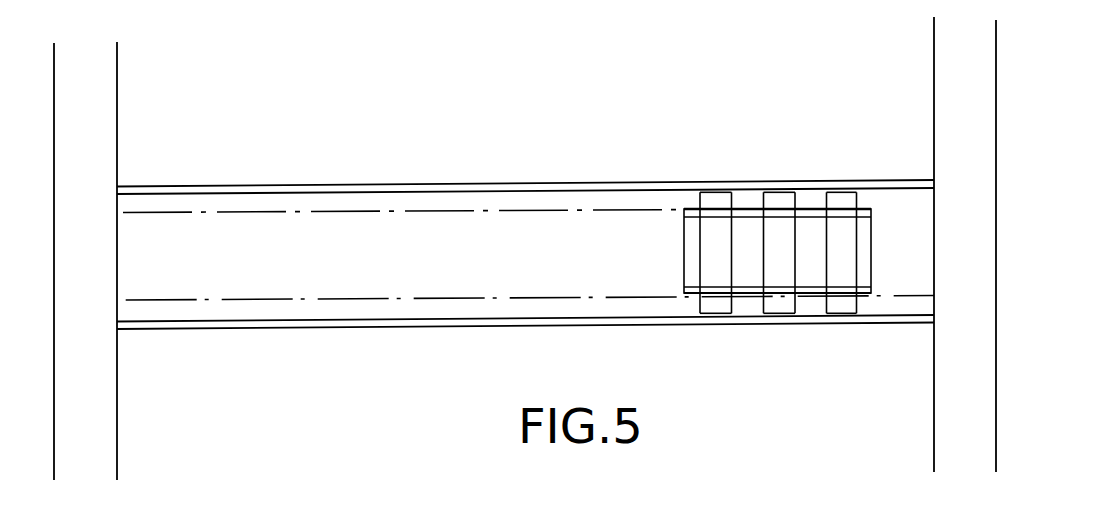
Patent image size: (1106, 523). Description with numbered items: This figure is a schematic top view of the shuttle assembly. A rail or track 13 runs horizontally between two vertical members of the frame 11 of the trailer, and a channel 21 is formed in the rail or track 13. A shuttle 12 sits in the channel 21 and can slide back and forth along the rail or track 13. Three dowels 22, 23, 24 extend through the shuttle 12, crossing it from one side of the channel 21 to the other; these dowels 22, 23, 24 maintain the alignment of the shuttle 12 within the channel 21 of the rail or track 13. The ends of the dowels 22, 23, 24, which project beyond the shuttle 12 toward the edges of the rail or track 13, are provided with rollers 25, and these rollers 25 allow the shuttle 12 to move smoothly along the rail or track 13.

The frame 11 is at (972, 138).
The shuttle 12 is at (684, 265).
The rail or track 13 is at (602, 182).
The channel 21 is at (505, 270).
The dowel 22 is at (713, 258).
The dowel 23 is at (782, 242).
The dowel 24 is at (840, 273).
The rollers 25 is at (845, 197).